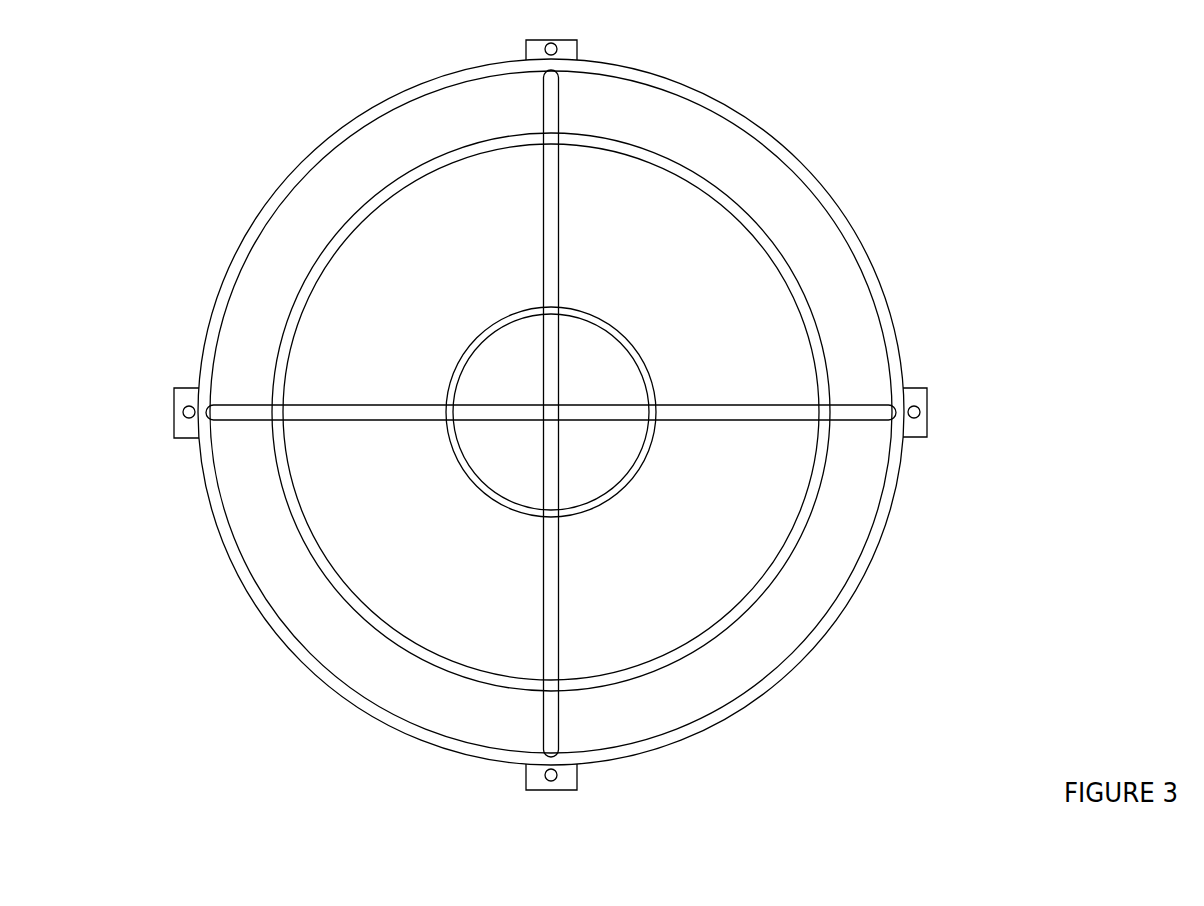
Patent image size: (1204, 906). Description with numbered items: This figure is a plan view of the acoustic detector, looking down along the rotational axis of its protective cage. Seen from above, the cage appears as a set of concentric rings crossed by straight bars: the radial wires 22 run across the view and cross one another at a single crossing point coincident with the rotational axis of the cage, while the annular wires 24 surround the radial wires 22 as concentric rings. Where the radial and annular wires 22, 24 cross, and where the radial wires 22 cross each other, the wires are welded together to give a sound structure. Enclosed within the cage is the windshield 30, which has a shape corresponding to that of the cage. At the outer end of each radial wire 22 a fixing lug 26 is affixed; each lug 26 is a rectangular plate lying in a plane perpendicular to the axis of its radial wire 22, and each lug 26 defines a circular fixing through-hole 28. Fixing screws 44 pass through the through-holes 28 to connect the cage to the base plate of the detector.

The radial wires 22 is at (551, 185).
The annular wires 24 is at (368, 720).
The fixing lug 26 is at (925, 437).
The circular fixing through-hole 28 is at (918, 405).
The windshield 30 is at (293, 592).
The fixing screws 44 is at (904, 422).